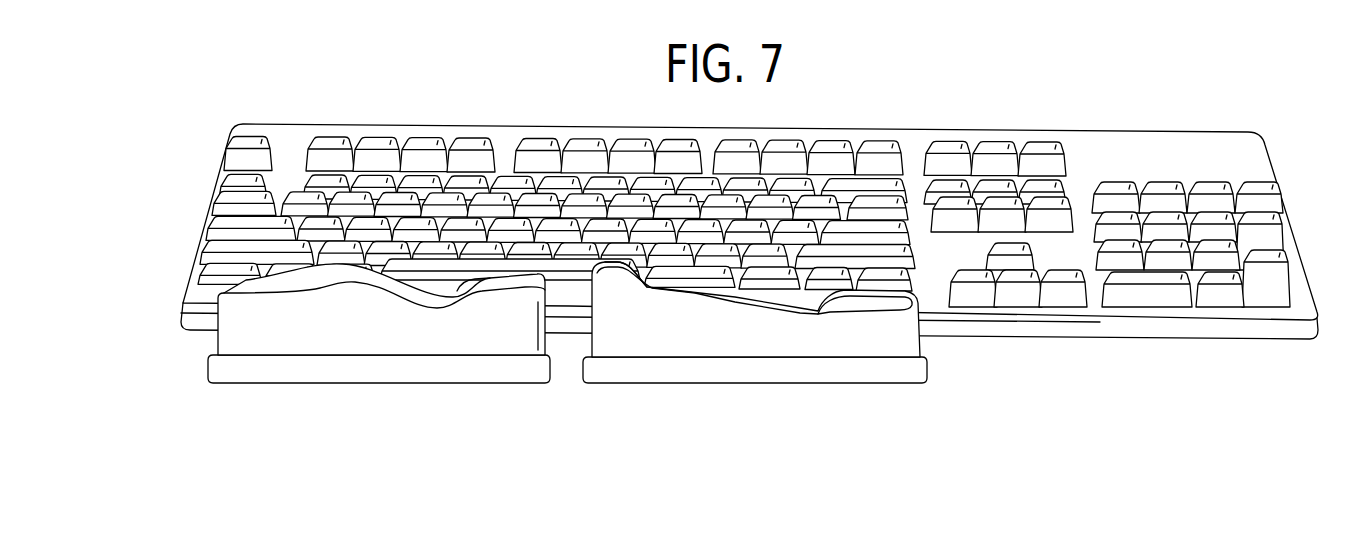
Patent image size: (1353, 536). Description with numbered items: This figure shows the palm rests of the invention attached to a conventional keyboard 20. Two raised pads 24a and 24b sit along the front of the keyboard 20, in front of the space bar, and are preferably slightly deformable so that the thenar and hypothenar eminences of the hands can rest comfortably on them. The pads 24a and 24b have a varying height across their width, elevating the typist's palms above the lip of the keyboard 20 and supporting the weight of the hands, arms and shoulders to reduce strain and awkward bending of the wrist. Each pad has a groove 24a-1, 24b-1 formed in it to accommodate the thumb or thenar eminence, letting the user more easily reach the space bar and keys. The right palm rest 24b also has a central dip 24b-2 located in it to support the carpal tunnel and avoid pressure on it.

The keyboard 20 is at (1137, 142).
The raised pad 24a is at (367, 338).
The groove 24a-1 is at (487, 278).
The raised pad 24b is at (728, 342).
The groove 24b-1 is at (675, 260).
The central dip 24b-2 is at (843, 292).